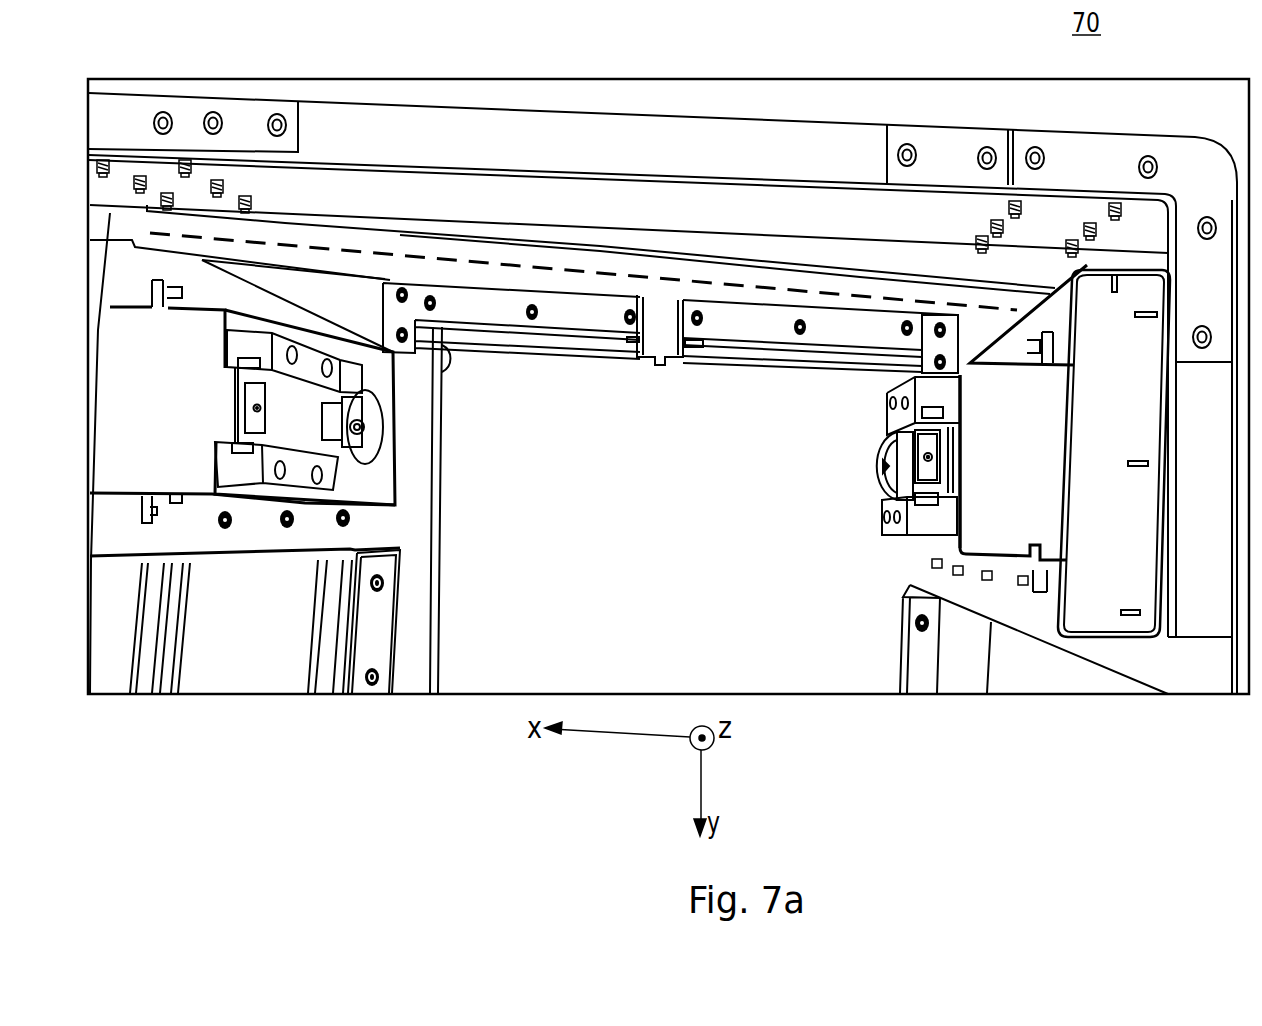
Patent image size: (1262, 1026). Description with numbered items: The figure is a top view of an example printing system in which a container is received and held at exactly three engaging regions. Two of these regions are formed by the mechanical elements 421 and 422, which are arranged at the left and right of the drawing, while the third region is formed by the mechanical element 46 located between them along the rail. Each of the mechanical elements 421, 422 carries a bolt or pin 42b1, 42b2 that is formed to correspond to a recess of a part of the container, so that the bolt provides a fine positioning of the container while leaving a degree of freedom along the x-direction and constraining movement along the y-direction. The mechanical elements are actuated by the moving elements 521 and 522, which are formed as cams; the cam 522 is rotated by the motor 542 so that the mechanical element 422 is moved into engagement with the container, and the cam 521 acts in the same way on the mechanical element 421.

The bolt or pin 42b1 is at (250, 406).
The mechanical element 421 is at (245, 420).
The moving element 521 is at (383, 445).
The mechanical element 46 is at (663, 367).
The moving element 522 is at (873, 463).
The bolt or pin 42b2 is at (935, 457).
The mechanical element 422 is at (938, 474).
The motor 542 is at (947, 507).